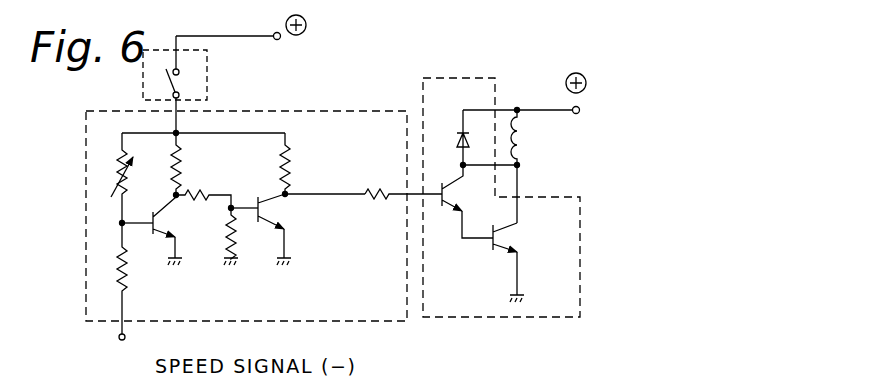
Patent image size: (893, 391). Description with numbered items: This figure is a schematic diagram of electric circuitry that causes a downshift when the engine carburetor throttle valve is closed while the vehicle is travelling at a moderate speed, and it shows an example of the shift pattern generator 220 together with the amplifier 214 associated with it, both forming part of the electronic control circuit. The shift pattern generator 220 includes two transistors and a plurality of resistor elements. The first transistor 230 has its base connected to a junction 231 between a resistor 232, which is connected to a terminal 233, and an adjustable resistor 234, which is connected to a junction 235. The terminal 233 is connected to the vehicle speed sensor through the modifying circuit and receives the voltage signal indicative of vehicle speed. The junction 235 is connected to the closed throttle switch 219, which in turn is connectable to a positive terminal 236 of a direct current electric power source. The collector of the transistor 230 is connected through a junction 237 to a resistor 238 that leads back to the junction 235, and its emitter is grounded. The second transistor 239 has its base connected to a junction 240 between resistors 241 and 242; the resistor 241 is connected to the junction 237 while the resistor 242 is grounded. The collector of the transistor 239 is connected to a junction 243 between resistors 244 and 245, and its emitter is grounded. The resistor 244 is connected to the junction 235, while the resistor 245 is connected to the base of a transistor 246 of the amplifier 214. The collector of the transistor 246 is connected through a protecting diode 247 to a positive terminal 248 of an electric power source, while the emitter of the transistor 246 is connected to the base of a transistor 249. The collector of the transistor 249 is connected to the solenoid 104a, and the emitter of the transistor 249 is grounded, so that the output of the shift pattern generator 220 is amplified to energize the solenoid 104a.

The solenoid 104a is at (524, 143).
The amplifier 214 is at (582, 234).
The closed throttle switch 219 is at (146, 48).
The shift pattern generator 220 is at (331, 323).
The first transistor 230 is at (163, 236).
The junction 231 is at (120, 224).
The resistor 232 is at (118, 262).
The terminal 233 is at (126, 338).
The adjustable resistor 234 is at (118, 172).
The junction 235 is at (182, 130).
The positive terminal 236 is at (280, 39).
The junction 237 is at (121, 182).
The resistor 238 is at (180, 158).
The second transistor 239 is at (255, 218).
The junction 240 is at (237, 204).
The resistor 241 is at (198, 200).
The resistor 242 is at (228, 232).
The junction 243 is at (289, 193).
The resistor 244 is at (288, 162).
The resistor 245 is at (378, 199).
The transistor 246 is at (455, 208).
The protecting diode 247 is at (458, 136).
The positive terminal 248 is at (579, 113).
The transistor 249 is at (496, 250).